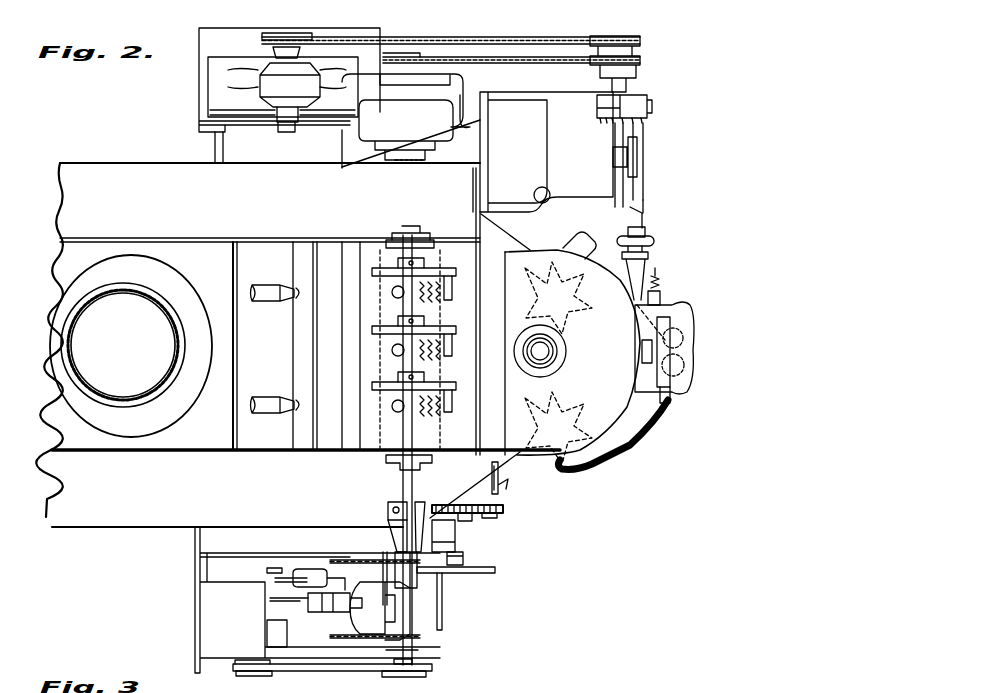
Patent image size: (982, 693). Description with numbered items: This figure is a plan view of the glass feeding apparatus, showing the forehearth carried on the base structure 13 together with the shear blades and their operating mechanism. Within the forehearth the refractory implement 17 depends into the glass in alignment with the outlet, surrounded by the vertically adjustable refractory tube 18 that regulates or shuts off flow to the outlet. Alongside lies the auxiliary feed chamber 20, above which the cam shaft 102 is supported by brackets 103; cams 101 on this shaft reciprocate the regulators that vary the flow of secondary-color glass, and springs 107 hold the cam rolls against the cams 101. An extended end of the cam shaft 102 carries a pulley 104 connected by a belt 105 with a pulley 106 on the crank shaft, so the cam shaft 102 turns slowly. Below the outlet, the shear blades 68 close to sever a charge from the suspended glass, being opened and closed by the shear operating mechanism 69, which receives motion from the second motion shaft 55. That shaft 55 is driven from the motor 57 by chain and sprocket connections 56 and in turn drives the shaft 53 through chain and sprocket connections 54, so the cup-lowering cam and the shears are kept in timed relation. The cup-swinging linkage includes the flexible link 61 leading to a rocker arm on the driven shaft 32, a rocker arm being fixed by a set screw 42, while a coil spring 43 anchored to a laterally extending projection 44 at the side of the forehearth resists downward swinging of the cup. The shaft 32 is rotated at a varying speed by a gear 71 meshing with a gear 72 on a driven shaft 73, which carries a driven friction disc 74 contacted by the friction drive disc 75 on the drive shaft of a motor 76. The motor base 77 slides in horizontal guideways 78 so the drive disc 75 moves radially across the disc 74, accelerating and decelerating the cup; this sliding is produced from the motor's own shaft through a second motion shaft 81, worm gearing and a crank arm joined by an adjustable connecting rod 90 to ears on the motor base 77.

The base structure 13 is at (235, 152).
The refractory implement 17 is at (543, 349).
The refractory tube 18 is at (560, 356).
The auxiliary feed chamber 20 is at (400, 436).
The driven shaft 32 is at (468, 486).
The set screw 42 is at (496, 514).
The coil spring 43 is at (508, 486).
The laterally extending projection 44 is at (535, 470).
The shaft 53 is at (285, 45).
The chain and sprocket connections 54 is at (465, 40).
The second motion shaft 55 is at (618, 40).
The chain and sprocket connections 56 is at (482, 58).
The motor 57 is at (418, 118).
The flexible link 61 is at (444, 692).
The shear blades 68 is at (580, 300).
The shear operating mechanism 69 is at (646, 258).
The gear 71 is at (494, 518).
The gear 72 is at (452, 530).
The driven shaft 73 is at (463, 559).
The driven friction disc 74 is at (492, 574).
The friction drive disc 75 is at (446, 621).
The motor 76 is at (380, 611).
The motor base 77 is at (350, 612).
The guideways 78 is at (355, 560).
The second motion shaft 81 is at (290, 606).
The adjustable connecting rod 90 is at (318, 573).
The cam 101 is at (373, 260).
The cam shaft 102 is at (400, 361).
The brackets 103 is at (410, 234).
The pulley 104 is at (418, 667).
The belt 105 is at (332, 671).
The pulley 106 is at (240, 676).
The springs 107 is at (440, 300).